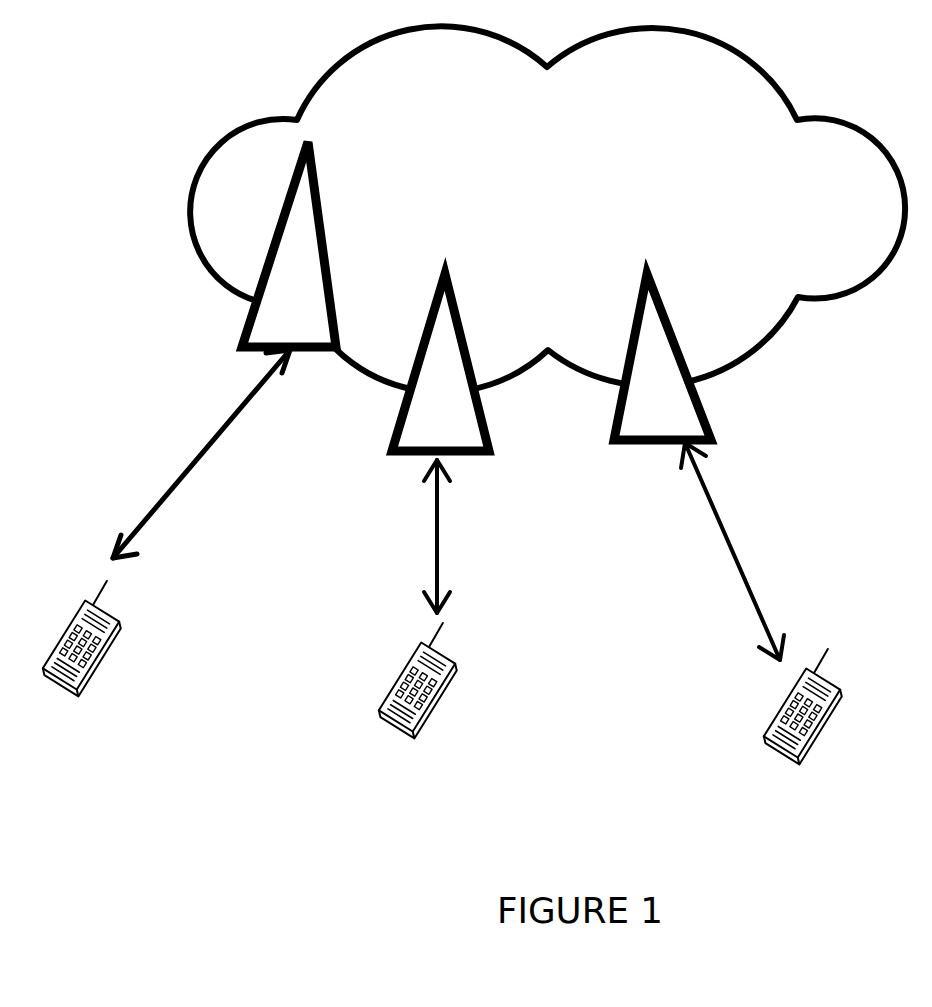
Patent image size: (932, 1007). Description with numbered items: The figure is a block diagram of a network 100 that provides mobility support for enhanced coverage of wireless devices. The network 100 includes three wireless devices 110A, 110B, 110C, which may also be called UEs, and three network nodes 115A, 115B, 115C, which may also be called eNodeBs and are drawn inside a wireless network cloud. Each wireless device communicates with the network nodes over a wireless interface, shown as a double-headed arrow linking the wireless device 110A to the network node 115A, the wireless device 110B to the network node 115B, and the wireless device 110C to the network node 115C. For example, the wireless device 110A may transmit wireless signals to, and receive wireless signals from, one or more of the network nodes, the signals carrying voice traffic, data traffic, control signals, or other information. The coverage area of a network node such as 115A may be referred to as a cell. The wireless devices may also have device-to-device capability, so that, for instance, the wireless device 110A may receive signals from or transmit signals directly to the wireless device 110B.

The network 100 is at (143, 147).
The wireless device 110A is at (84, 664).
The wireless device 110B is at (425, 705).
The wireless device 110C is at (814, 728).
The network node 115A is at (235, 245).
The network node 115B is at (403, 402).
The network node 115C is at (654, 391).